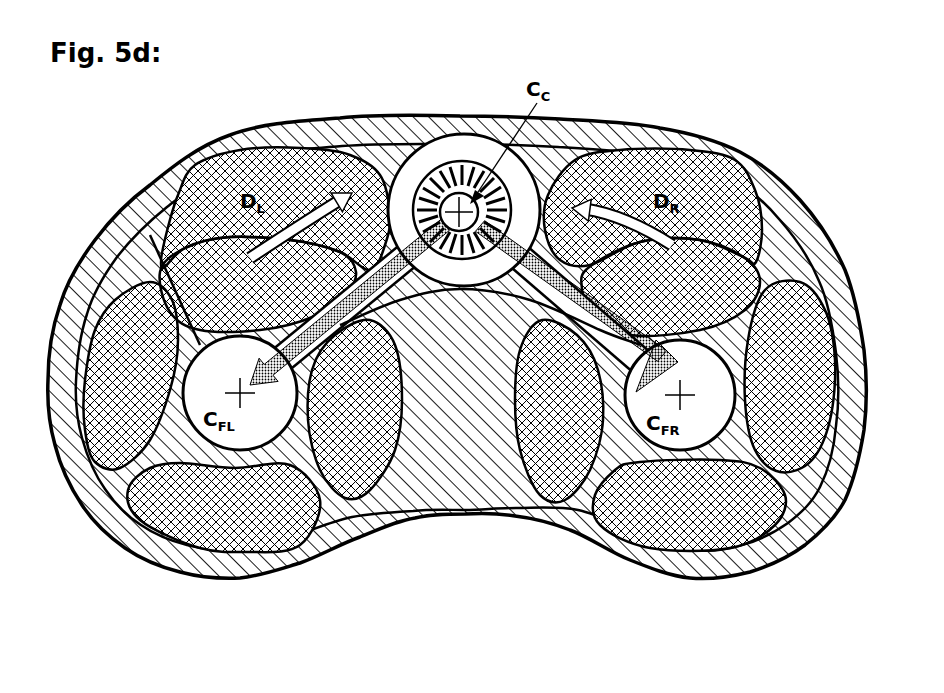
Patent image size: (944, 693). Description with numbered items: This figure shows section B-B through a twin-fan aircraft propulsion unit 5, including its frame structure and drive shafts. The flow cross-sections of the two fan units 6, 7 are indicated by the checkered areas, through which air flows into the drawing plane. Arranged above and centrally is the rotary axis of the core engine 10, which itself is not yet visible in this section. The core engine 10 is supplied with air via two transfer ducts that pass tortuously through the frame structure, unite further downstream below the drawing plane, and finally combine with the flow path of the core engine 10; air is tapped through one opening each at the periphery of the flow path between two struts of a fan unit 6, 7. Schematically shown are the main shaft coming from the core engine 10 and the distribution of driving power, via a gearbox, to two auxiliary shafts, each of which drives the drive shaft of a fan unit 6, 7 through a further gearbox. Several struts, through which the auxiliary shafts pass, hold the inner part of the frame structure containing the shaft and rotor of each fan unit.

The human torso/body cross-section 5 is at (458, 553).
The fan unit 6 is at (190, 573).
The fan unit 7 is at (725, 572).
The core engine 10 is at (445, 150).